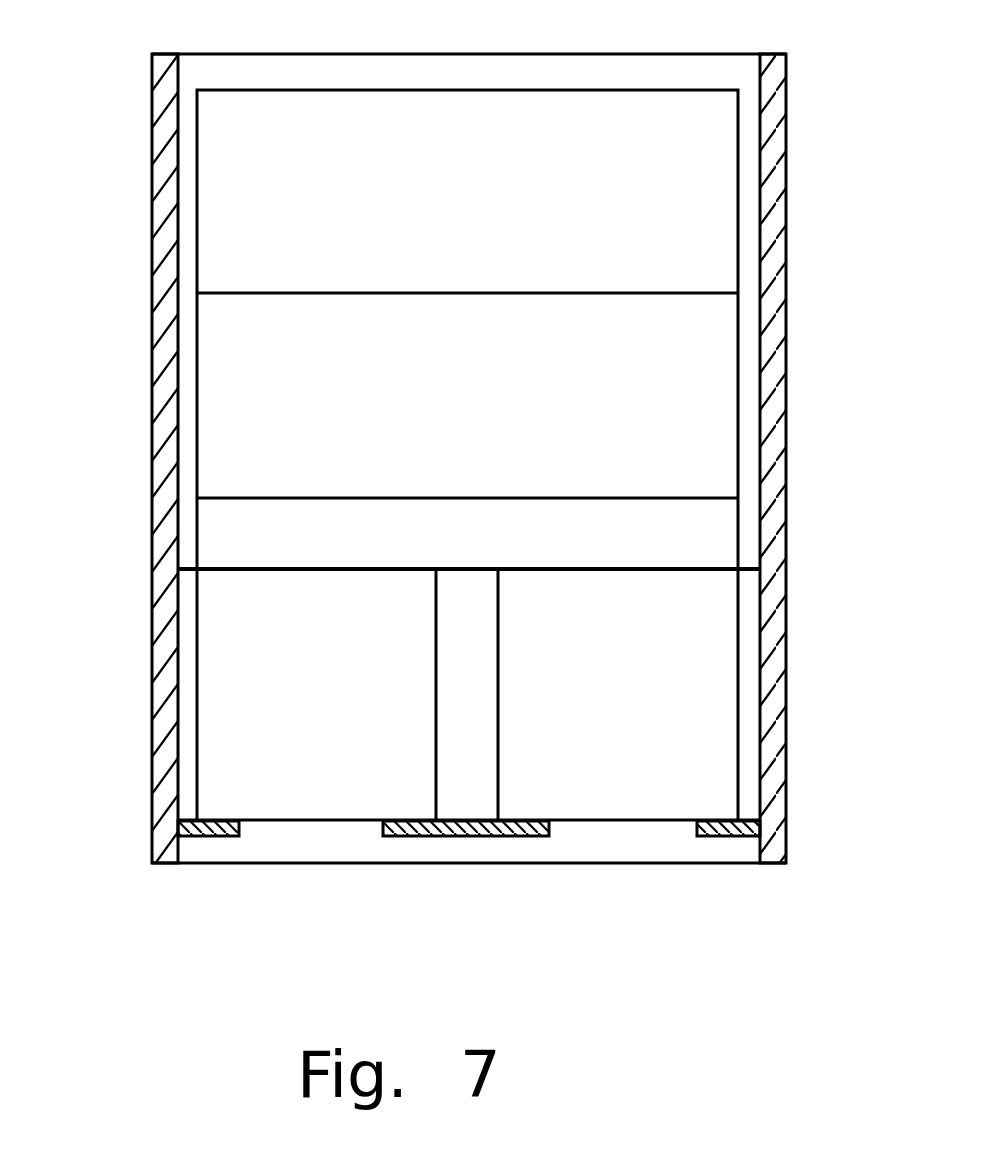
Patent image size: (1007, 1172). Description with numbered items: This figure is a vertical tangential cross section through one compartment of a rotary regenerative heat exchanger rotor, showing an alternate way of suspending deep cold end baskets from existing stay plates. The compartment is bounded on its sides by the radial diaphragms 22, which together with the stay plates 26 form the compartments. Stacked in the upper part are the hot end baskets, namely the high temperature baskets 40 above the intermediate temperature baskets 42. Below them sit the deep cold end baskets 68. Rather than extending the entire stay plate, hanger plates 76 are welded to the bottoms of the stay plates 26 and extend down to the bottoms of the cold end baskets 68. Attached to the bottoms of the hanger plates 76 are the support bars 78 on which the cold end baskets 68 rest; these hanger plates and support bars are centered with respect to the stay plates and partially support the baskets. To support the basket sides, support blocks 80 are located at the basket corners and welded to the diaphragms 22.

The radial diaphragm 22 is at (153, 677).
The stay plate 26 is at (717, 69).
The high temperature basket 40 is at (220, 163).
The intermediate temperature basket 42 is at (220, 423).
The deep cold end basket 68 is at (717, 630).
The hanger plate 76 is at (480, 642).
The support bar 78 is at (480, 827).
The support block 80 is at (217, 818).